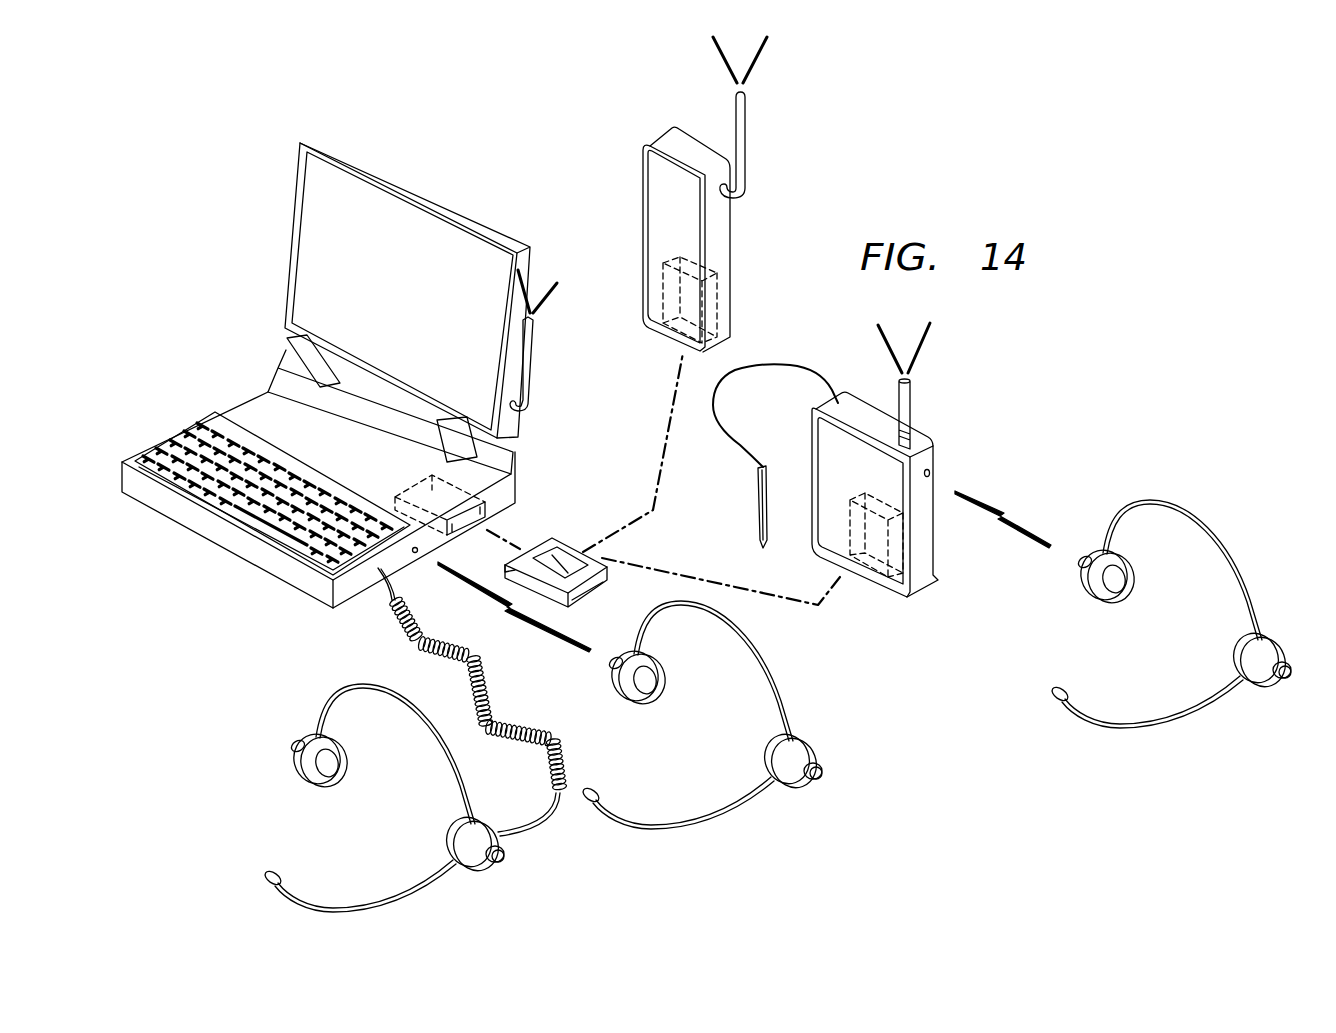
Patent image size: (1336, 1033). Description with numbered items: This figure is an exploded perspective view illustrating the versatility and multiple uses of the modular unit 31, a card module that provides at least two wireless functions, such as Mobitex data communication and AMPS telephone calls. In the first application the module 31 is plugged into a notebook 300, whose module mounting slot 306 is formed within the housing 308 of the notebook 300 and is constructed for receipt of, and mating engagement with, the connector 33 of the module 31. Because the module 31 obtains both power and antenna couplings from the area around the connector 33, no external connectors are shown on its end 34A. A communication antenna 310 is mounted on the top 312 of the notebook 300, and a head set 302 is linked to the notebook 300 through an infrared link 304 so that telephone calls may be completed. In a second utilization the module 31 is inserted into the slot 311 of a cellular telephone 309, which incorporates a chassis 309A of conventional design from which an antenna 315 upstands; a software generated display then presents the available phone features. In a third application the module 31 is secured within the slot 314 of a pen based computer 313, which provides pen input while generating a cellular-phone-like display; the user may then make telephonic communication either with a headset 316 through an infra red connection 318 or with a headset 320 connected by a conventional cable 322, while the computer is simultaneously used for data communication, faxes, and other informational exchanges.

The pen based computer 313 is at (247, 393).
The slot 314 is at (420, 480).
The modular unit 31 is at (571, 552).
The connector 33 is at (547, 537).
The end 34A is at (580, 590).
The conventional cable 322 is at (435, 640).
The infra red connection 318 is at (543, 628).
The headset 320 is at (435, 738).
The headset 316 is at (753, 662).
The head set 302 is at (1183, 502).
The infrared link 304 is at (1017, 520).
The cellular telephone 309 is at (730, 194).
The chassis 309A is at (725, 257).
The slot 311 is at (710, 300).
The antenna 315 is at (748, 137).
The notebook 300 is at (856, 478).
The housing 308 is at (923, 577).
The communication antenna 310 is at (913, 400).
The top 312 is at (853, 403).
The module mounting slot 306 is at (872, 583).